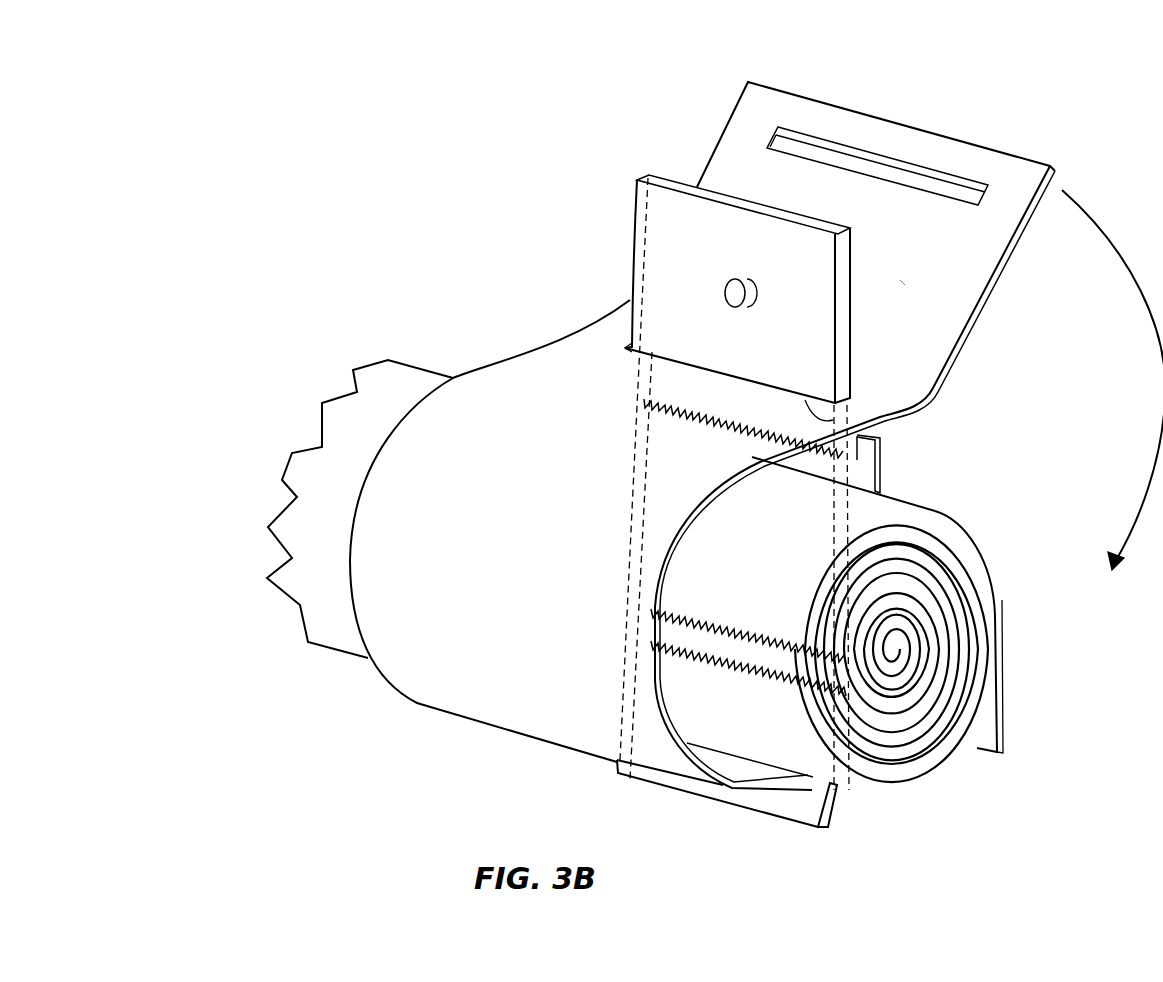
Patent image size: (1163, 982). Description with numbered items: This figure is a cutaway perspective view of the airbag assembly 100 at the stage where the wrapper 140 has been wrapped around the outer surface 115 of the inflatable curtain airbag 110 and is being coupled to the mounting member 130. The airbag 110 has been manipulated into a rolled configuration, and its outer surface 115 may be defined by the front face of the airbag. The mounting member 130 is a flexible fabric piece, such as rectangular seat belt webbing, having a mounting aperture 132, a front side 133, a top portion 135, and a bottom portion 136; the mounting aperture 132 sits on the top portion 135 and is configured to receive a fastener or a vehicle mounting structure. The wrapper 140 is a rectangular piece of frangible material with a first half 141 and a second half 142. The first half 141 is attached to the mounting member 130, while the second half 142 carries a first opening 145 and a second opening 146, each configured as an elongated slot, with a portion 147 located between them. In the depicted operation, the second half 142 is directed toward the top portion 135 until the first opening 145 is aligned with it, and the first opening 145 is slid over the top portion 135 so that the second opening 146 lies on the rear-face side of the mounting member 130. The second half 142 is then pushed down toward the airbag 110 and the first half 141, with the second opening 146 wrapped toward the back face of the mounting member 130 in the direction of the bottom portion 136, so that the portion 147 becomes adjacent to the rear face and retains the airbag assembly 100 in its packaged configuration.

The airbag assembly 100 is at (358, 166).
The inflatable curtain airbag 110 is at (675, 571).
The outer surface 115 is at (299, 529).
The mounting member 130 is at (679, 274).
The mounting aperture 132 is at (723, 291).
The front side 133 is at (732, 356).
The top portion 135 is at (714, 246).
The bottom portion 136 is at (805, 812).
The wrapper 140 is at (511, 352).
The first half 141 is at (869, 461).
The second half 142 is at (899, 199).
The first opening 145 is at (882, 418).
The second opening 146 is at (922, 198).
The portion 147 is at (895, 273).